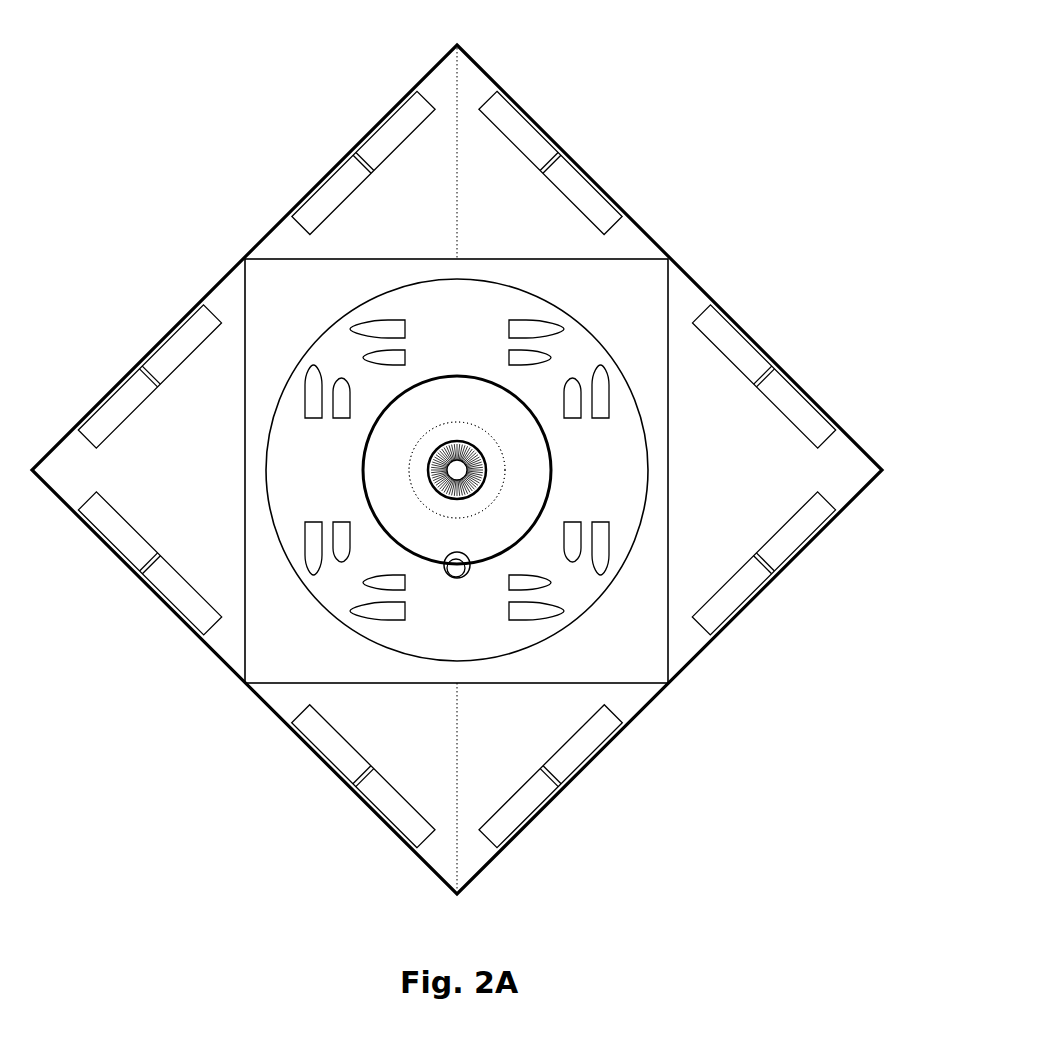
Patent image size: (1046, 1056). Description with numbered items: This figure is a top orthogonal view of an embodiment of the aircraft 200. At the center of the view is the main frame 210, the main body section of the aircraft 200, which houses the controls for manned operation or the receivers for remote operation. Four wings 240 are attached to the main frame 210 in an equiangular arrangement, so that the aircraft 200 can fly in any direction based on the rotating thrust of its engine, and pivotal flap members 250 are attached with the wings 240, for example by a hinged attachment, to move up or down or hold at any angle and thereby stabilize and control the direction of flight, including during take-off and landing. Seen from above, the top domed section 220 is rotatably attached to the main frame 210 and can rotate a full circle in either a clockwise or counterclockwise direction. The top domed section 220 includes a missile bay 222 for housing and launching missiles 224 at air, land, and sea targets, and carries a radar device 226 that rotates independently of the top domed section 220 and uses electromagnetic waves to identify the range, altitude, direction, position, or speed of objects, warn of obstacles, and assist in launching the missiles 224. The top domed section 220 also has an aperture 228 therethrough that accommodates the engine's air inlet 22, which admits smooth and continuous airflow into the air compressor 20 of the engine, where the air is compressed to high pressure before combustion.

The aircraft 200 is at (614, 120).
The pivotal flap members 250 is at (332, 190).
The wings 240 is at (442, 860).
The main frame 210 is at (632, 646).
The missile bay 222 is at (600, 470).
The top domed section 220 is at (510, 413).
The air inlet 22 is at (457, 440).
The air compressor 20 is at (409, 470).
The aperture 228 is at (506, 468).
The radar device 226 is at (443, 565).
The missiles 224 is at (608, 550).